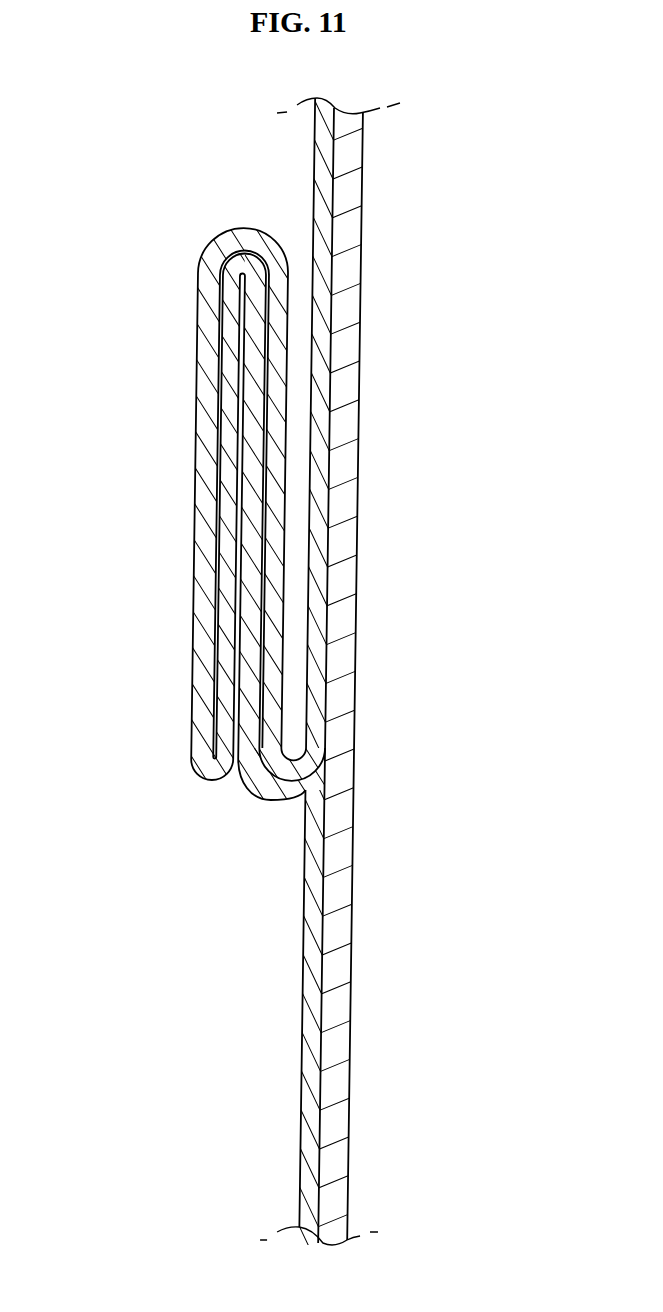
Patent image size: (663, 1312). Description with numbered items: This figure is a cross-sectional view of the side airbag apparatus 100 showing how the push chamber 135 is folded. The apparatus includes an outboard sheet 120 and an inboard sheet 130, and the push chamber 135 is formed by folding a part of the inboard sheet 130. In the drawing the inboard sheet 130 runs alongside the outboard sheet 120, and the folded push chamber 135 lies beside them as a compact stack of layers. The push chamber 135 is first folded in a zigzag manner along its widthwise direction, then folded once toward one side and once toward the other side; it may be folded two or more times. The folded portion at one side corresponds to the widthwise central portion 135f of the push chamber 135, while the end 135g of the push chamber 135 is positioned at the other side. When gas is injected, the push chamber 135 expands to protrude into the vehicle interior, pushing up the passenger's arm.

The side airbag apparatus 100 is at (532, 168).
The outboard sheet 120 is at (357, 727).
The inboard sheet 130 is at (299, 993).
The push chamber 135 is at (197, 542).
The widthwise central portion of the push chamber 135f is at (232, 230).
The end of the push chamber 135g is at (212, 779).